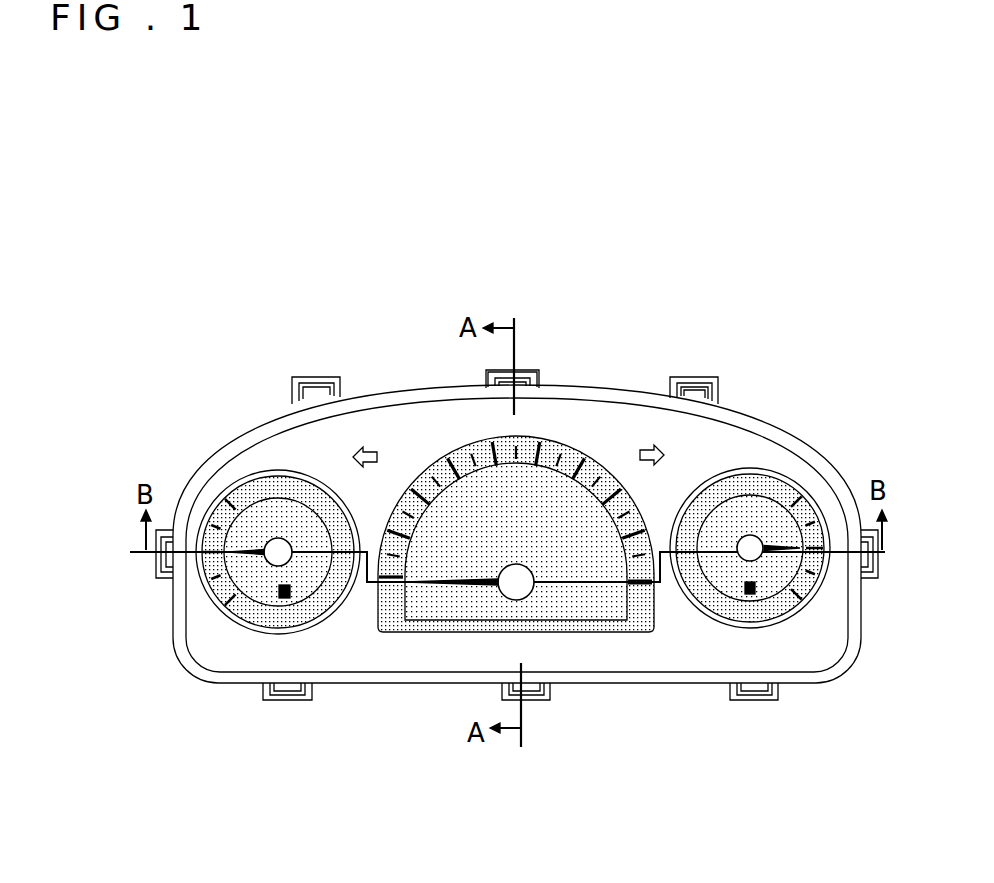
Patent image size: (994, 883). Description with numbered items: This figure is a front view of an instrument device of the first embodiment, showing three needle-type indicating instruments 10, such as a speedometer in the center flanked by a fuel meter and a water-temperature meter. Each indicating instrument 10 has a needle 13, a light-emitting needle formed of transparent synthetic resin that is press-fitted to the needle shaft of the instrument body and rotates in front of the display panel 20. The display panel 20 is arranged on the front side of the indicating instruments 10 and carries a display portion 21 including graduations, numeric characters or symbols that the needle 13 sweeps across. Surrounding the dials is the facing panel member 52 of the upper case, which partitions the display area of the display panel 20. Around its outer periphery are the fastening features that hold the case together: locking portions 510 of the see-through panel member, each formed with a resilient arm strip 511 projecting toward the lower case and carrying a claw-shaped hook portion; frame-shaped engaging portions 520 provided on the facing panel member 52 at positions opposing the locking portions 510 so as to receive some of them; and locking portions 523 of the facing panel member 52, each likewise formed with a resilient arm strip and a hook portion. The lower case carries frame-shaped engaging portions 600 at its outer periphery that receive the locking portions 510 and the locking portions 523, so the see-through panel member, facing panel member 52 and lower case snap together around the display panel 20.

The indicating instrument 10 is at (507, 538).
The needle 13 is at (253, 557).
The display panel 20 is at (245, 472).
The display portion 21 is at (490, 443).
The facing panel member 52 is at (676, 655).
The locking portion 510 is at (286, 366).
The resilient arm strip 511 is at (710, 382).
The frame-shaped engaging portion 520 is at (310, 698).
The locking portion 523 is at (524, 358).
The frame-shaped engaging portion 600 is at (325, 380).